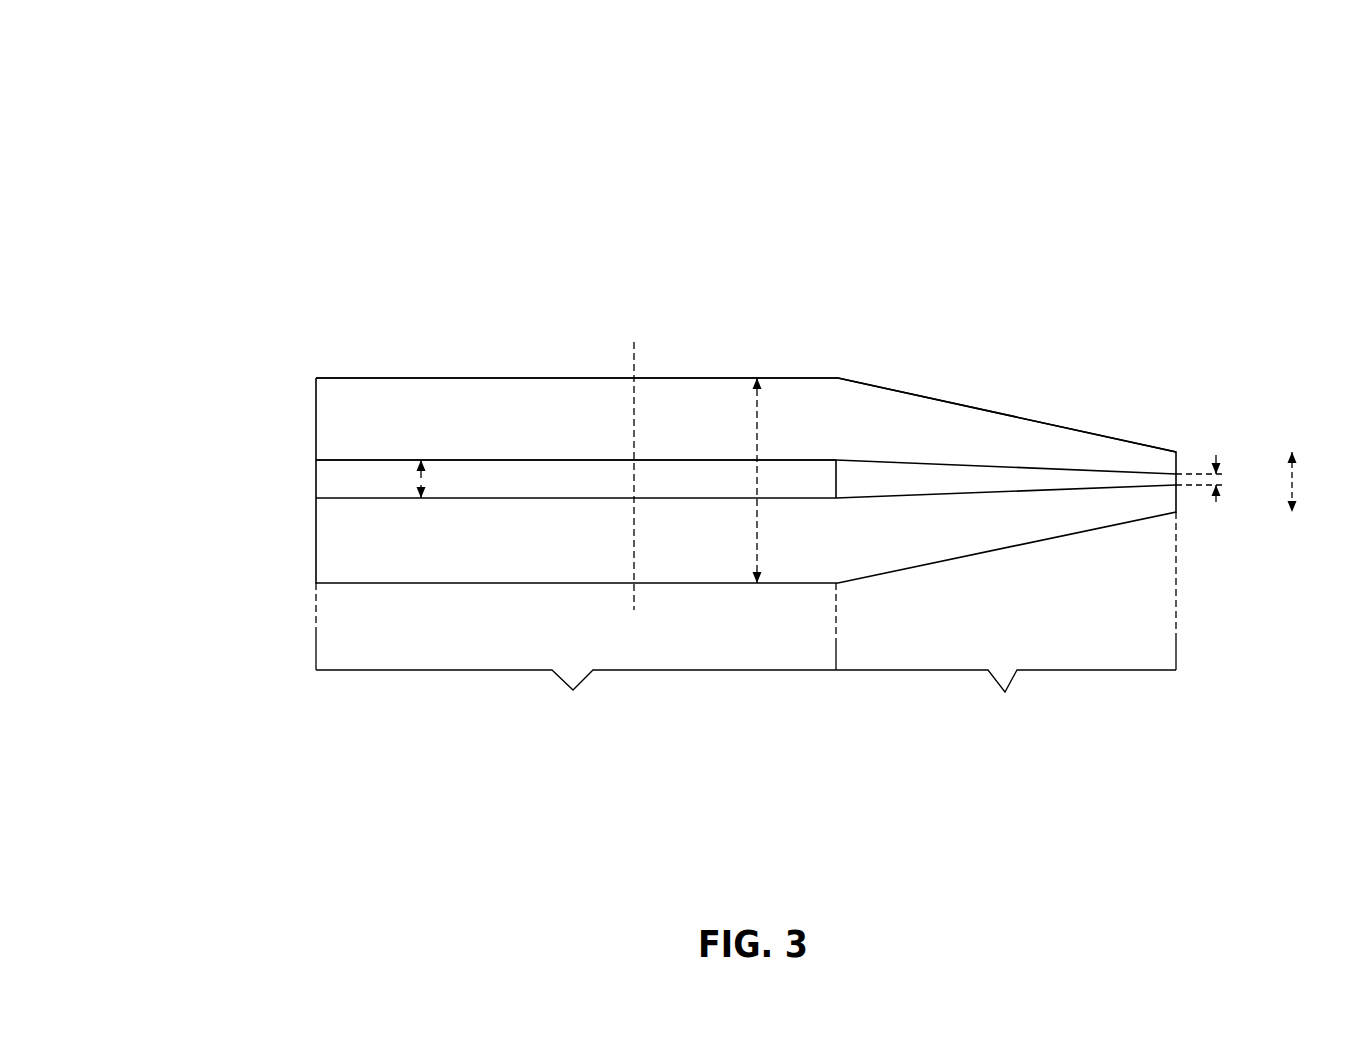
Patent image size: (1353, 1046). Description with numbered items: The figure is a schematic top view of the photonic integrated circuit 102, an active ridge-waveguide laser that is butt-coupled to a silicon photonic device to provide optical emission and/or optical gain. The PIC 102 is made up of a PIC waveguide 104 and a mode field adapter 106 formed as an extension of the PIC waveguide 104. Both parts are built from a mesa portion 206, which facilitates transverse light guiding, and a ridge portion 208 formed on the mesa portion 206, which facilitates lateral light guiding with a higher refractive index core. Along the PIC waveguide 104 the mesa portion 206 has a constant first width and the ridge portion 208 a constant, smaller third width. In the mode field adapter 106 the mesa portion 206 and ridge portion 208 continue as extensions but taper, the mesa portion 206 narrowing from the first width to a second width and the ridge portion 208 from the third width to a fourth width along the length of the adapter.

The photonic integrated circuit 102 is at (699, 386).
The PIC waveguide 104 is at (576, 657).
The mode field adapter 106 is at (1006, 622).
The mesa portion 206 is at (424, 397).
The ridge portion 208 is at (326, 482).